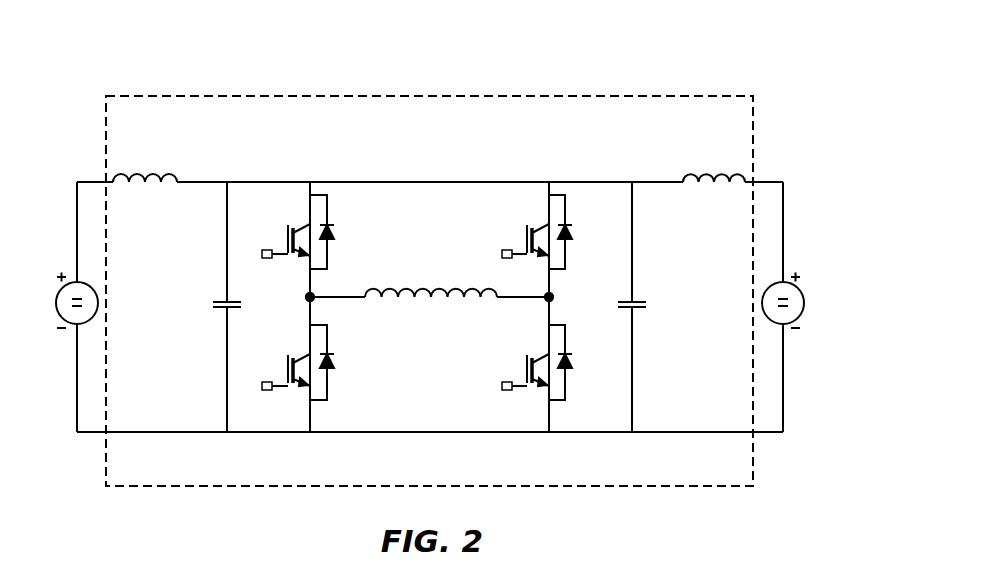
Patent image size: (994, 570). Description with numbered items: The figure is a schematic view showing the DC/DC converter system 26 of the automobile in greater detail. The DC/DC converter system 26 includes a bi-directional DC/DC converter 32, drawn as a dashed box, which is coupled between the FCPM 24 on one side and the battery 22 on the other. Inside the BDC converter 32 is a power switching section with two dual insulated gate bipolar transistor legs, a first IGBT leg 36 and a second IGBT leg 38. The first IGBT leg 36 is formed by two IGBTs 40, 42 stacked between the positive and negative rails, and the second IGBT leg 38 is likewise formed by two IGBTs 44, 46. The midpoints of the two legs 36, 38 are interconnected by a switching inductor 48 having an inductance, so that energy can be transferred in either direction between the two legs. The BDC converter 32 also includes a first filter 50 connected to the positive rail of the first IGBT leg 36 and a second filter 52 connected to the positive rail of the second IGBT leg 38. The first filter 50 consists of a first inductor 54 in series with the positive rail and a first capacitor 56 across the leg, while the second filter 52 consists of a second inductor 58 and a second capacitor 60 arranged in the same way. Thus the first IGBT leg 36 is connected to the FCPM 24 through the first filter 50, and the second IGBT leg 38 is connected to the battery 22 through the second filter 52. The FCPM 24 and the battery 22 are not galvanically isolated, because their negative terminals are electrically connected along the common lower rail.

The battery 22 is at (790, 325).
The FCPM 24 is at (77, 282).
The DC/DC converter system 26 is at (622, 33).
The bi-directional DC/DC converter 32 is at (270, 96).
The first IGBT leg 36 is at (330, 277).
The second IGBT leg 38 is at (507, 277).
The IGBT 40 is at (288, 240).
The IGBT 42 is at (288, 370).
The IGBT 44 is at (527, 240).
The IGBT 46 is at (527, 372).
The switching inductor 48 is at (430, 298).
The first filter 50 is at (274, 271).
The second filter 52 is at (530, 272).
The first inductor 54 is at (143, 184).
The first capacitor 56 is at (240, 304).
The second inductor 58 is at (713, 182).
The second capacitor 60 is at (652, 303).